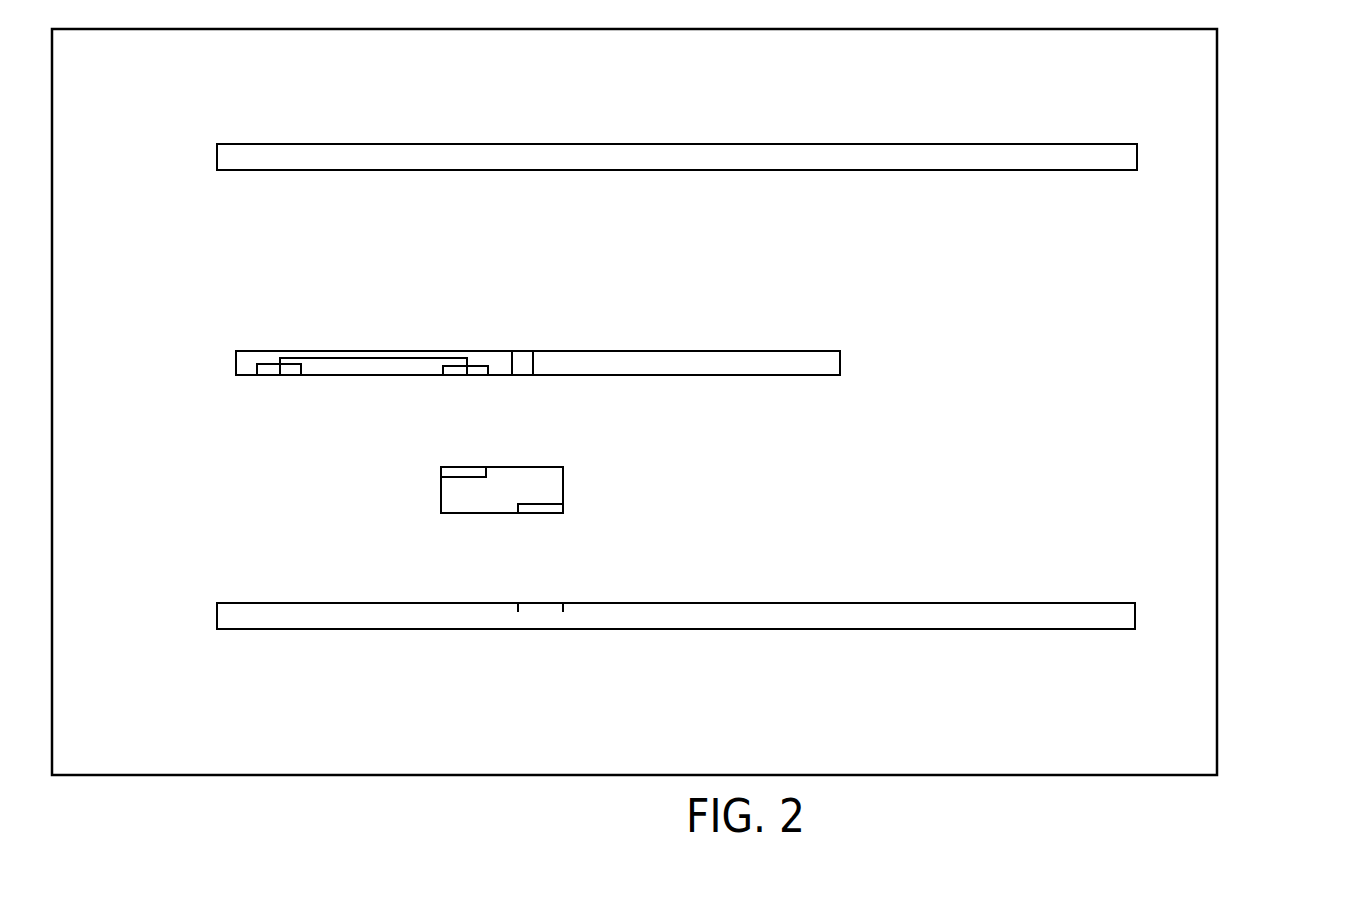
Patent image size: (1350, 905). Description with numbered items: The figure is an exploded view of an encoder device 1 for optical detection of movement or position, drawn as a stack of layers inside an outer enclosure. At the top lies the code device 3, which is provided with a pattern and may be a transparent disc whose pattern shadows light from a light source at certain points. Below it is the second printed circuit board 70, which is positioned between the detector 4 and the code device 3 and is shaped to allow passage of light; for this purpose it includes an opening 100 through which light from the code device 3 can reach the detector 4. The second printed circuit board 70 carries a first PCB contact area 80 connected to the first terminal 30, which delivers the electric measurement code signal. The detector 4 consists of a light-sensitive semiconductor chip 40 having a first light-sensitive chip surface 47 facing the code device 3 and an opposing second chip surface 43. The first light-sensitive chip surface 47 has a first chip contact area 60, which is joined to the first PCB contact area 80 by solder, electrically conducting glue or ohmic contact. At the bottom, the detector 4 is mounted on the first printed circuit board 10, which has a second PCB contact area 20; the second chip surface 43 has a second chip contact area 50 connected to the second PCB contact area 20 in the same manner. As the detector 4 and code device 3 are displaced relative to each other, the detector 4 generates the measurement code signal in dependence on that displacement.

The encoder device 1 is at (1217, 587).
The code device 3 is at (217, 155).
The second printed circuit board 70 is at (236, 362).
The first terminal 30 is at (278, 375).
The first PCB contact area 80 is at (463, 375).
The opening 100 is at (520, 351).
The detector 4 is at (581, 469).
The light-sensitive semiconductor chip 40 is at (563, 488).
The first chip contact area 60 is at (465, 467).
The first light-sensitive chip surface 47 is at (522, 467).
The second chip contact area 50 is at (541, 513).
The second chip surface 43 is at (452, 513).
The first printed circuit board 10 is at (1135, 615).
The second PCB contact area 20 is at (540, 605).